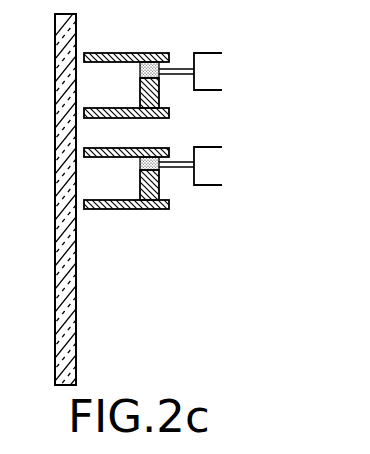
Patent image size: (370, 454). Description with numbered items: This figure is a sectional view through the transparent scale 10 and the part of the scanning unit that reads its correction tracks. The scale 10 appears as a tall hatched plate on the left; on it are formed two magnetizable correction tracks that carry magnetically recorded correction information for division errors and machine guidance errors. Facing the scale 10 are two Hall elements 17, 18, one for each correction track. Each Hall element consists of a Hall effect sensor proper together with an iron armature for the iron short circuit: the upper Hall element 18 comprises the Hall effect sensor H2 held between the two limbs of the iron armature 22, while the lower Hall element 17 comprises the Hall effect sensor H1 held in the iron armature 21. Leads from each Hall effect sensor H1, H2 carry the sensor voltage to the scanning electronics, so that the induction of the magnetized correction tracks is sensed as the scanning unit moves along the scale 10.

The scale 10 is at (77, 348).
The Hall element 17 is at (174, 199).
The Hall element 18 is at (173, 65).
The iron armature 21 is at (110, 209).
The iron armature 22 is at (106, 53).
The Hall effect sensor H1 is at (140, 160).
The Hall effect sensor H2 is at (124, 78).